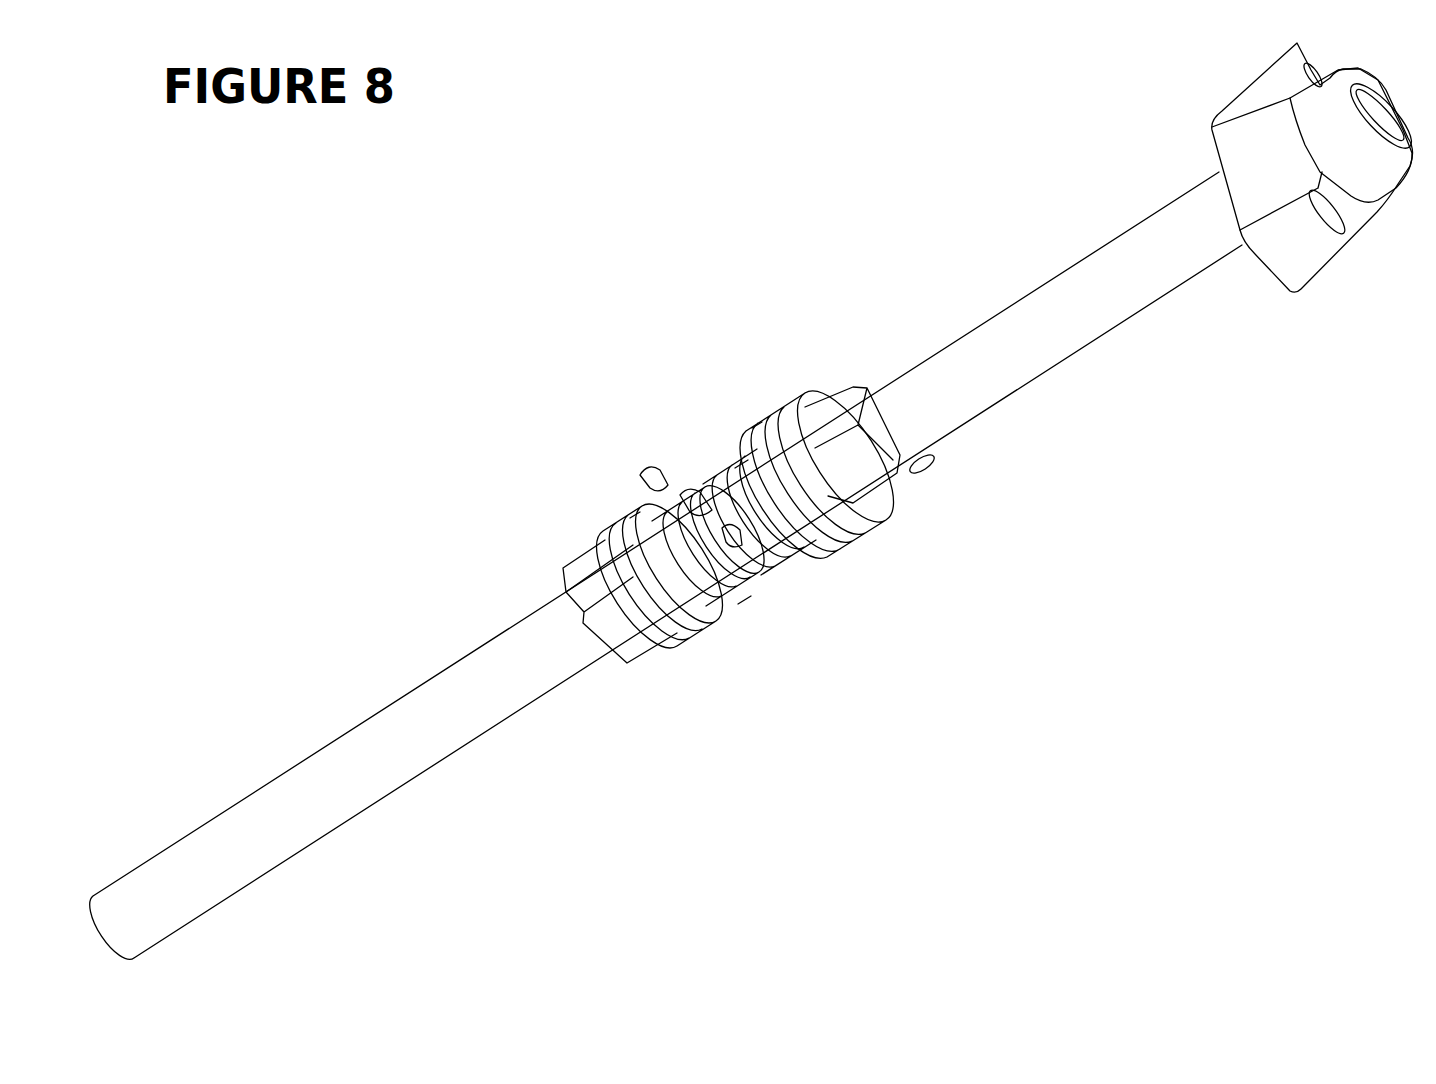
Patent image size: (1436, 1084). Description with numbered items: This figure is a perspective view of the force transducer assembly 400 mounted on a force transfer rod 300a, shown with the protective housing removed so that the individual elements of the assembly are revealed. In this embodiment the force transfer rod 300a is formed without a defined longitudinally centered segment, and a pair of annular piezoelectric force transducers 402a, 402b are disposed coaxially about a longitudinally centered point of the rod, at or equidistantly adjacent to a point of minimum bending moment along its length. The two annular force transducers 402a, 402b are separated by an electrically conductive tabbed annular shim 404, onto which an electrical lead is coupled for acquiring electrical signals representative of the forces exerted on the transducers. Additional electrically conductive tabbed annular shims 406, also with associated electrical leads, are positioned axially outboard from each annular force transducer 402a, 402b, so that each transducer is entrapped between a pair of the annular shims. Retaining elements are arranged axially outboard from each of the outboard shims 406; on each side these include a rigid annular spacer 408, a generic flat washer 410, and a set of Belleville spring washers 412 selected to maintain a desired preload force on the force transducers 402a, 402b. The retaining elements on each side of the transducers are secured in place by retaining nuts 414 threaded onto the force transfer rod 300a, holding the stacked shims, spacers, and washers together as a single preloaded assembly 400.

The force transfer rod 300a is at (330, 742).
The force transducer assembly 400 is at (482, 292).
The annular piezoelectric force transducer 402a is at (760, 592).
The annular piezoelectric force transducer 402b is at (780, 580).
The electrically conductive tabbed annular shim 404 is at (695, 505).
The electrically conductive tabbed annular shim 406 is at (640, 475).
The rigid annular spacer 408 is at (737, 462).
The flat washer 410 is at (757, 420).
The Belleville spring washers 412 is at (786, 400).
The retaining nut 414 is at (835, 412).